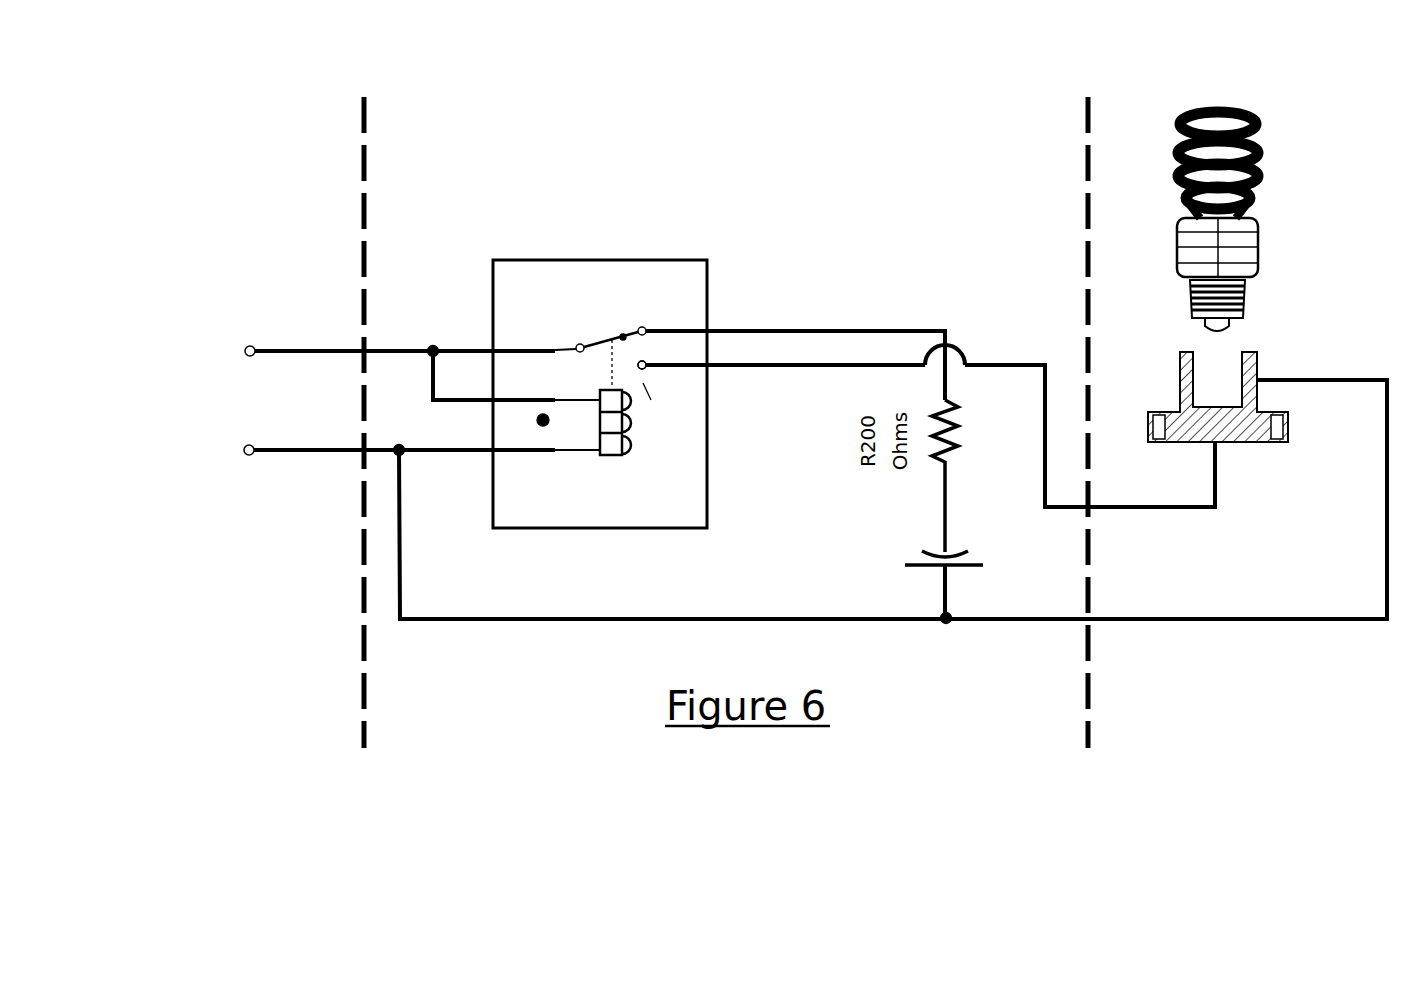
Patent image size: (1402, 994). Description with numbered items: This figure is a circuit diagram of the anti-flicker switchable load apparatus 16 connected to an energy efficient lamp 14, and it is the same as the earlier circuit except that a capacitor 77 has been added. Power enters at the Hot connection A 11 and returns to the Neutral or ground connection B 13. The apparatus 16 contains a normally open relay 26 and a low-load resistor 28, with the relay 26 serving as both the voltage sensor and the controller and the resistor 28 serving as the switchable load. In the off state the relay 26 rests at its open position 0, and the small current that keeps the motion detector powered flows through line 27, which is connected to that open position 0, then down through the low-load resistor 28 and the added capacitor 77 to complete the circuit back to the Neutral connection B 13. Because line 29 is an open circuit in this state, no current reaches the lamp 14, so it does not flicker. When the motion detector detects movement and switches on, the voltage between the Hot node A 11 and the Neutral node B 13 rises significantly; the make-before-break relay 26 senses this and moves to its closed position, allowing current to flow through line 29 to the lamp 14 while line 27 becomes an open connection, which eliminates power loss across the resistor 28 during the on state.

The Hot connection A 11 is at (243, 361).
The Neutral (or ground) connection B 13 is at (242, 478).
The energy efficient lamp 14 is at (1258, 278).
The anti-flicker switchable load apparatus 16 is at (943, 313).
The normally open relay 26 is at (637, 500).
The line 27 is at (865, 328).
The low-load resistor 28 is at (925, 539).
The line 29 is at (1003, 362).
The capacitor 77 is at (965, 575).
The open position 0 is at (645, 342).